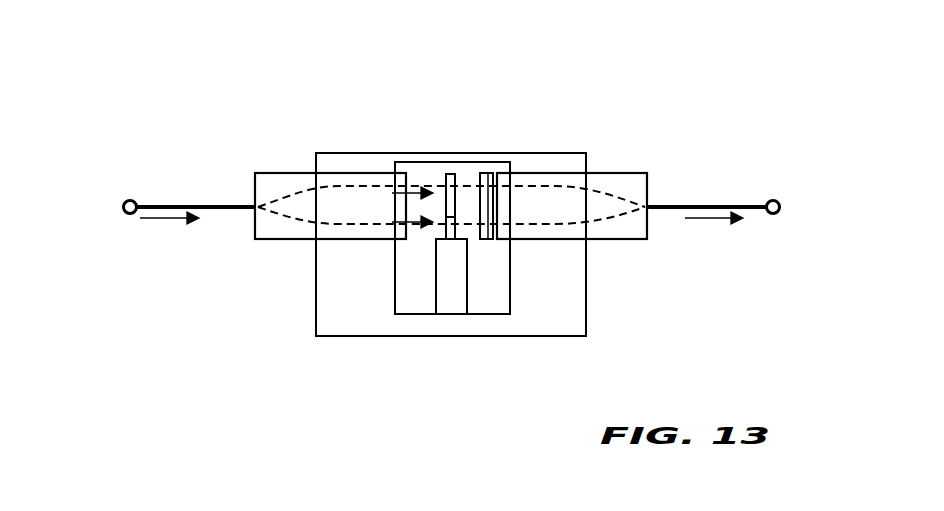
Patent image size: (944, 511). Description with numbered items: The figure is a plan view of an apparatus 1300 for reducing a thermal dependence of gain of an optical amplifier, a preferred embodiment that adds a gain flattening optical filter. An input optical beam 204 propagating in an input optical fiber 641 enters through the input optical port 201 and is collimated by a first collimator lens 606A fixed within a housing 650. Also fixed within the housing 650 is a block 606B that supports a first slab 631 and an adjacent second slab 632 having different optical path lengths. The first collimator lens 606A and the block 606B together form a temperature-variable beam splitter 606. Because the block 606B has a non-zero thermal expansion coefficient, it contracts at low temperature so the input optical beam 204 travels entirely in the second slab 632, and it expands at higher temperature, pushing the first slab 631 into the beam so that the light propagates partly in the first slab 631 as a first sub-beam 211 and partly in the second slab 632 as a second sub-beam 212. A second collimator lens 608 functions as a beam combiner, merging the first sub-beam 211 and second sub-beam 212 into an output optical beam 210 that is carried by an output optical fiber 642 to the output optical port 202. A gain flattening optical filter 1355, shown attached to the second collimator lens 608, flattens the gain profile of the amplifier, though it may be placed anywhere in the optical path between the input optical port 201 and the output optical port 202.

The apparatus 1300 is at (750, 37).
The input optical port 201 is at (124, 201).
The input optical fiber 641 is at (178, 204).
The input optical beam 204 is at (165, 220).
The first collimator lens 606A is at (275, 173).
The housing 650 is at (566, 153).
The second slab 632 is at (452, 174).
The first slab 631 is at (444, 236).
The block 606B is at (467, 255).
The temperature-variable beam splitter 606 is at (460, 234).
The gain flattening optical filter 1355 is at (490, 174).
The second collimator lens 608 is at (630, 173).
The output optical fiber 642 is at (712, 206).
The output optical port 202 is at (779, 202).
The output optical beam 210 is at (718, 222).
The first sub-beam 211 is at (396, 222).
The second sub-beam 212 is at (400, 193).